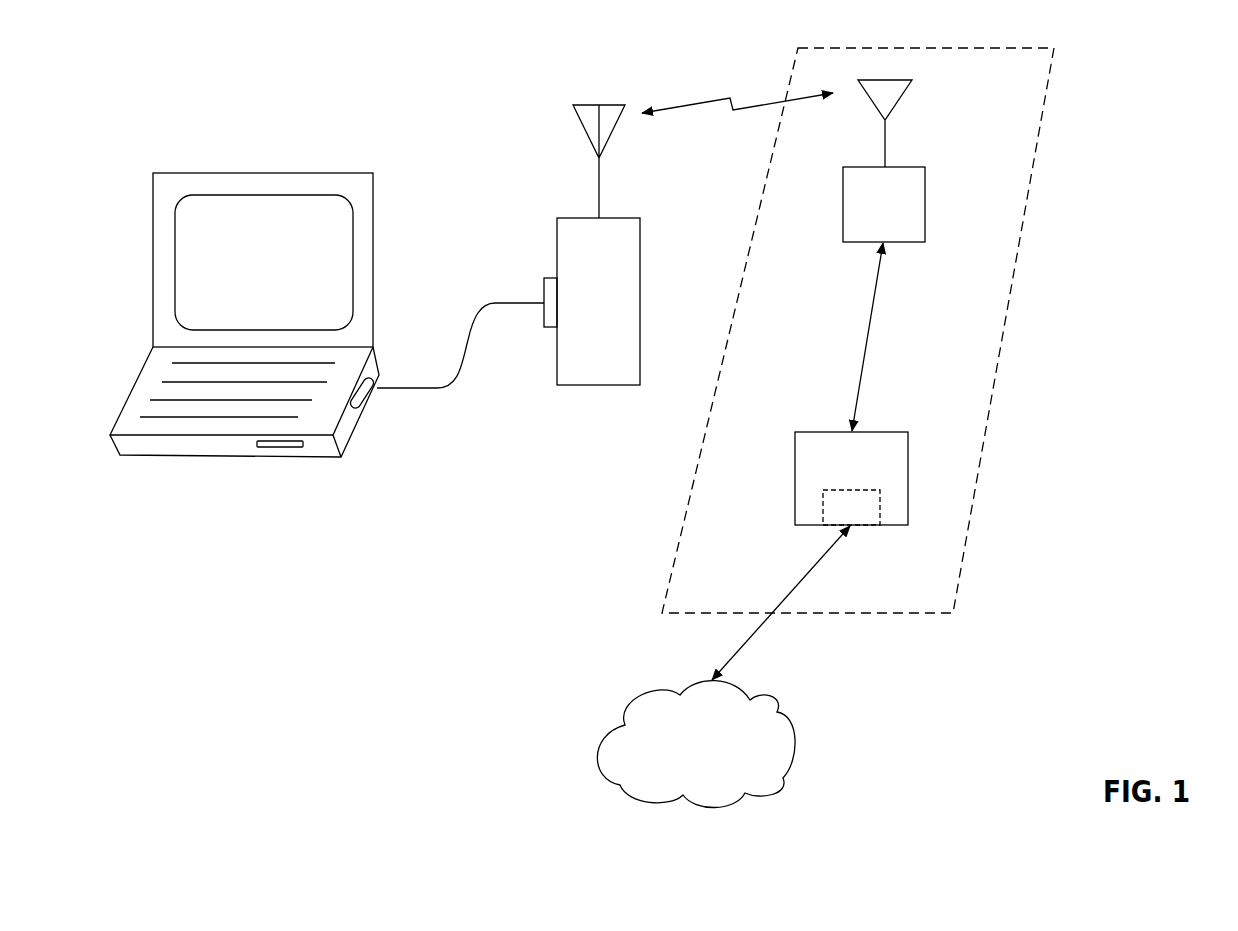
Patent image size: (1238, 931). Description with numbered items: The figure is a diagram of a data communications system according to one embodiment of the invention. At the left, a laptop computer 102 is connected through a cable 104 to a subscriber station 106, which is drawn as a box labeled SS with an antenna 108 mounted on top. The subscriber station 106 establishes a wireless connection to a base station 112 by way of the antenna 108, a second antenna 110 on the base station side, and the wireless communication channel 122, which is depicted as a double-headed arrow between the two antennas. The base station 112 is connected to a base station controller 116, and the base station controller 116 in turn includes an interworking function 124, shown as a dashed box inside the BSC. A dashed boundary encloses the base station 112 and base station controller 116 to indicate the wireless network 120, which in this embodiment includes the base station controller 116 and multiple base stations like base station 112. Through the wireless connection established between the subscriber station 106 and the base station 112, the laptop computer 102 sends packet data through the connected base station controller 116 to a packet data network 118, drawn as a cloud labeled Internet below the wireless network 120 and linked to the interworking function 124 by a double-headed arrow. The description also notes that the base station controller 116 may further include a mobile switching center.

The laptop computer 102 is at (292, 173).
The cable 104 is at (442, 388).
The subscriber station 106 is at (617, 218).
The antenna 108 is at (590, 103).
The antenna 110 is at (899, 100).
The base station 112 is at (903, 243).
The base station controller 116 is at (883, 432).
The packet data network 118 is at (773, 707).
The wireless network 120 is at (937, 48).
The wireless communication channel 122 is at (710, 100).
The interworking function 124 is at (857, 525).